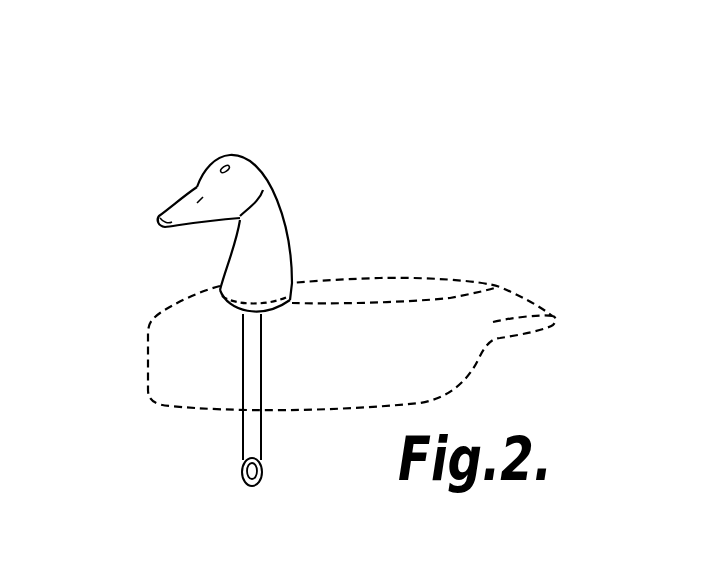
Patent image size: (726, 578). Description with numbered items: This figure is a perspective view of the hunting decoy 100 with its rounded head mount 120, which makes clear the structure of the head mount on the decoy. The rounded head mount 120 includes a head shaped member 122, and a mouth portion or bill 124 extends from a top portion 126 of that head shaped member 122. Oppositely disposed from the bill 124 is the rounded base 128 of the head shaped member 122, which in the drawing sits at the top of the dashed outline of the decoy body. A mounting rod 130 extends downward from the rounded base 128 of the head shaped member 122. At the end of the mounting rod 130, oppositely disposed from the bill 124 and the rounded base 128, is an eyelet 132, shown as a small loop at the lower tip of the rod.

The hunting decoy 100 is at (507, 237).
The rounded head mount 120 is at (150, 132).
The head shaped member 122 is at (240, 161).
The bill 124 is at (195, 190).
The top portion 126 is at (309, 139).
The rounded base 128 is at (221, 306).
The mounting rod 130 is at (243, 372).
The eyelet 132 is at (258, 483).